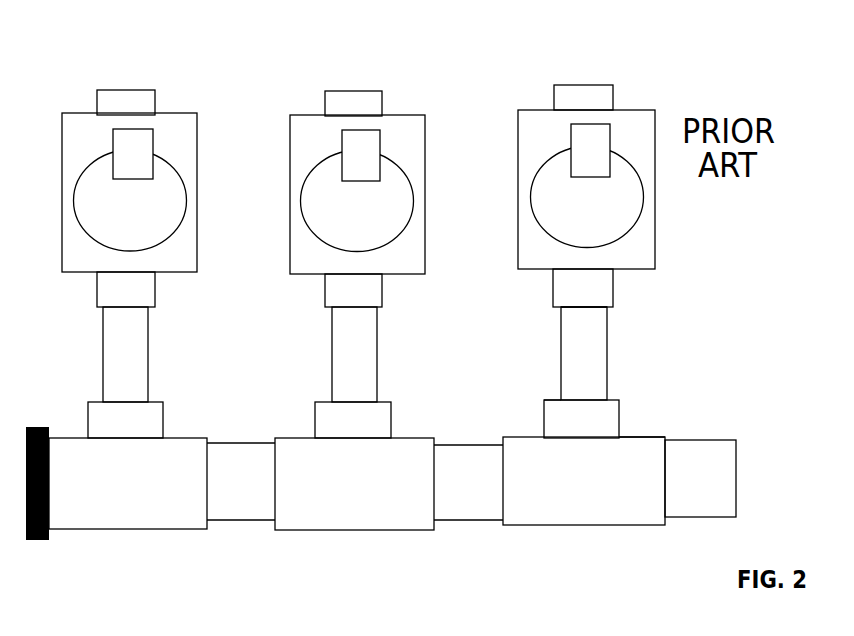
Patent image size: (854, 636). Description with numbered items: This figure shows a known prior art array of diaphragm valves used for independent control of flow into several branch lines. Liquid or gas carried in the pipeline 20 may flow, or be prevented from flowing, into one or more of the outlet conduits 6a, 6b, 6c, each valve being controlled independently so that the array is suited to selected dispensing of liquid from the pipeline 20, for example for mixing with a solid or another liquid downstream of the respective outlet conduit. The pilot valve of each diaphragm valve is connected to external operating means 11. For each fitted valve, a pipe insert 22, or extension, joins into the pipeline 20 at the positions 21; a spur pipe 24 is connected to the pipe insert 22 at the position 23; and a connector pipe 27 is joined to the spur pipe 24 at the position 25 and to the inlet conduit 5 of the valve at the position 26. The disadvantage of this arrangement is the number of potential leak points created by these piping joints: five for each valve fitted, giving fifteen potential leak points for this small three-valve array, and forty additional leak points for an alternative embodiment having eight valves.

The outlet conduit 6a is at (557, 153).
The outlet conduit 6b is at (363, 92).
The outlet conduit 6c is at (138, 92).
The external operating means 11 is at (583, 140).
The inlet conduit 5 is at (570, 285).
The leak position 26 is at (607, 313).
The connector pipe 27 is at (598, 358).
The leak position 25 is at (563, 397).
The spur pipe 24 is at (607, 432).
The leak position 23 is at (622, 437).
The pipe insert 22 is at (607, 490).
The pipeline 20 is at (717, 453).
The leak positions 21 is at (500, 522).